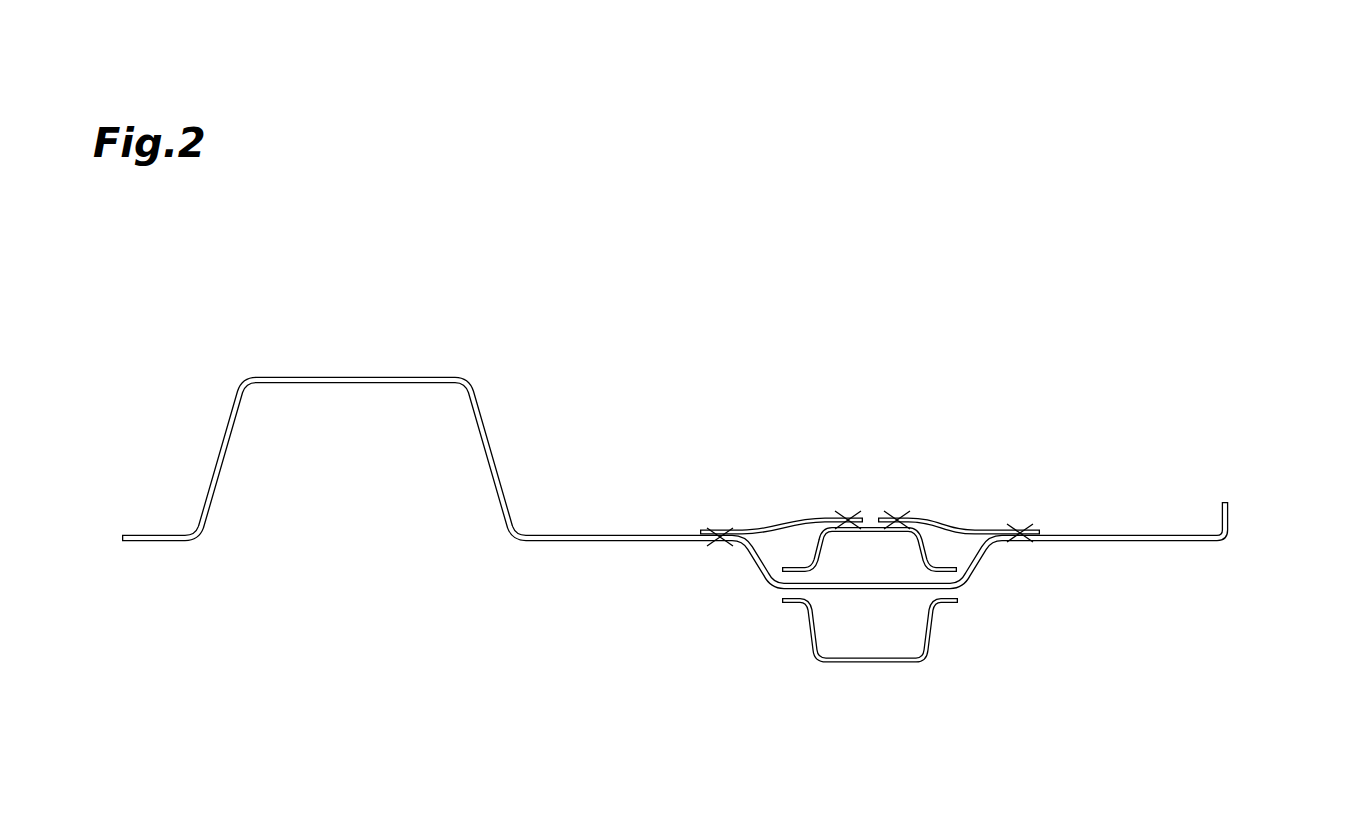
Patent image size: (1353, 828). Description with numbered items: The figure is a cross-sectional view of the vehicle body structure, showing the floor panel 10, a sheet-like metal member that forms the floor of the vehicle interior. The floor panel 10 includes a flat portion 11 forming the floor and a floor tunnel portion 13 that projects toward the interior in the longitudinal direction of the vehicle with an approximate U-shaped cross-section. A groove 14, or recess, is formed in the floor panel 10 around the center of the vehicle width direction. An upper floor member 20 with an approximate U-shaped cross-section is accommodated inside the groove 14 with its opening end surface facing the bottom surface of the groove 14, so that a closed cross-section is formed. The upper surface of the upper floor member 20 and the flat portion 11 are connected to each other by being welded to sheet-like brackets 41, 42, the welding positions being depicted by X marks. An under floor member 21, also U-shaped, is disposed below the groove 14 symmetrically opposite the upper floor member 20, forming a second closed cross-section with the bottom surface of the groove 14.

The floor panel 10 is at (729, 465).
The flat portion 11 is at (1122, 538).
The floor tunnel portion 13 is at (405, 377).
The groove 14 is at (760, 578).
The upper floor member 20 is at (928, 548).
The under floor member 21 is at (932, 630).
The sheet-like bracket 41 is at (938, 522).
The sheet-like bracket 42 is at (797, 522).